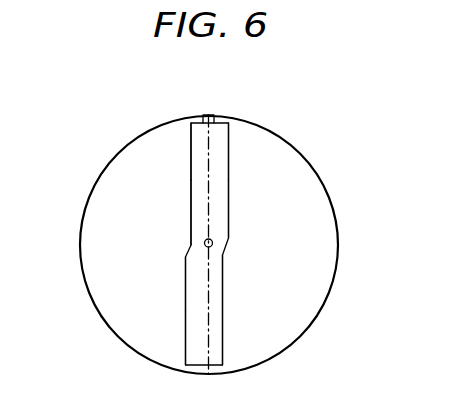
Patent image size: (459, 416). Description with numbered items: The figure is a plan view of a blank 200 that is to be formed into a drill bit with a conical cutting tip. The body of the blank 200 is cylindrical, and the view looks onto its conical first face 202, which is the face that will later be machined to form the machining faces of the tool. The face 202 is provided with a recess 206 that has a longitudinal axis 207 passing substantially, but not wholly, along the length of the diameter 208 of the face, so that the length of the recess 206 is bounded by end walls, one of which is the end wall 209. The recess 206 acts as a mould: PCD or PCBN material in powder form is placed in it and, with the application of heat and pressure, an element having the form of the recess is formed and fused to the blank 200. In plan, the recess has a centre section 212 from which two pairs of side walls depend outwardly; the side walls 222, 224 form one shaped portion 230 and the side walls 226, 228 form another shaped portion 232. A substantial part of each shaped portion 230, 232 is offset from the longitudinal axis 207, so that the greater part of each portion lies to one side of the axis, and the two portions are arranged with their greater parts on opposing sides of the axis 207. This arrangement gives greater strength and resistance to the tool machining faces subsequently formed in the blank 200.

The blank 200 is at (297, 187).
The conical first face 202 is at (147, 162).
The recess 206 is at (217, 116).
The longitudinal axis 207 is at (207, 317).
The diameter 208 is at (208, 187).
The end wall 209 is at (205, 116).
The centre section 212 is at (204, 245).
The side wall 222 is at (188, 152).
The side wall 224 is at (230, 155).
The side wall 226 is at (186, 283).
The side wall 228 is at (223, 300).
The shaped portion 230 is at (218, 211).
The shaped portion 232 is at (217, 347).